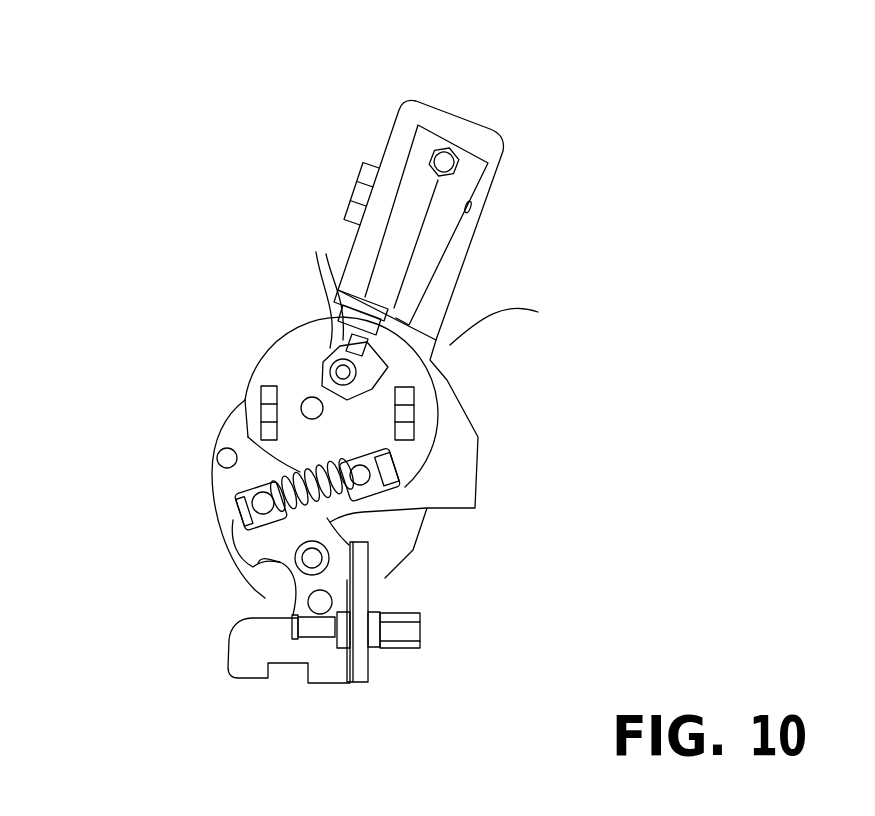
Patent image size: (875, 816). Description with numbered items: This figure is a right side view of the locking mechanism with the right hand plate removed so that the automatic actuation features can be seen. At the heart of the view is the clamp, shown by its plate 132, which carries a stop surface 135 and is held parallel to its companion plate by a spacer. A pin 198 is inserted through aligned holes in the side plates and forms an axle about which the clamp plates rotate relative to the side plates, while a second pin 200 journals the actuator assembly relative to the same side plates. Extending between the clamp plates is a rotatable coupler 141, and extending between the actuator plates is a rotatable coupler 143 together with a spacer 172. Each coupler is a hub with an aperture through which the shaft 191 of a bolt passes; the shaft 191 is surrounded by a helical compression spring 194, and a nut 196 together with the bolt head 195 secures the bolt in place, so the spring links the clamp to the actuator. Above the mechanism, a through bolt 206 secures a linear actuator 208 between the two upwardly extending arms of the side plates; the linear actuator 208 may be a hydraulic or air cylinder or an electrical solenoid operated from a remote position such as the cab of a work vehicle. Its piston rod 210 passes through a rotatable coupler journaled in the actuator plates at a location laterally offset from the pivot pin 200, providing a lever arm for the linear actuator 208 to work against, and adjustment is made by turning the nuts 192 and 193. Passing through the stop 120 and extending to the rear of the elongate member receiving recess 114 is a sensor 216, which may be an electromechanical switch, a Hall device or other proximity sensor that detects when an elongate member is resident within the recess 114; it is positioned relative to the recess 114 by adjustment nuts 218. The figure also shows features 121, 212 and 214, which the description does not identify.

The elongate member receiving recess 114 is at (235, 627).
The stop 120 is at (361, 577).
The pivot hole 121 is at (224, 454).
The plate 132 is at (250, 563).
The stop surface 135 is at (405, 525).
The rotatable coupler 141 is at (247, 488).
The rotatable coupler 143 is at (405, 503).
The spacer 172 is at (262, 414).
The shaft 191 is at (352, 440).
The nut 192 is at (320, 376).
The nut 193 is at (319, 268).
The helical compression spring 194 is at (250, 540).
The bolt head 195 is at (246, 512).
The nut 196 is at (385, 468).
The pin 198 is at (345, 604).
The pin 200 is at (304, 401).
The through bolt 206 is at (441, 175).
The linear actuator 208 is at (408, 222).
The piston rod 210 is at (511, 322).
The ball joint 212 is at (356, 368).
The nut 214 is at (336, 358).
The sensor 216 is at (403, 633).
The adjustment nuts 218 is at (365, 645).